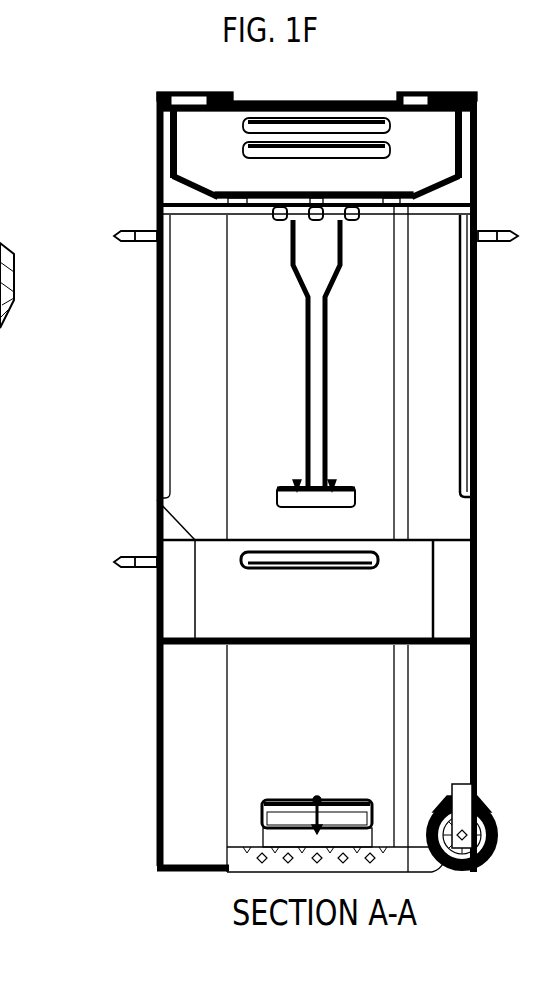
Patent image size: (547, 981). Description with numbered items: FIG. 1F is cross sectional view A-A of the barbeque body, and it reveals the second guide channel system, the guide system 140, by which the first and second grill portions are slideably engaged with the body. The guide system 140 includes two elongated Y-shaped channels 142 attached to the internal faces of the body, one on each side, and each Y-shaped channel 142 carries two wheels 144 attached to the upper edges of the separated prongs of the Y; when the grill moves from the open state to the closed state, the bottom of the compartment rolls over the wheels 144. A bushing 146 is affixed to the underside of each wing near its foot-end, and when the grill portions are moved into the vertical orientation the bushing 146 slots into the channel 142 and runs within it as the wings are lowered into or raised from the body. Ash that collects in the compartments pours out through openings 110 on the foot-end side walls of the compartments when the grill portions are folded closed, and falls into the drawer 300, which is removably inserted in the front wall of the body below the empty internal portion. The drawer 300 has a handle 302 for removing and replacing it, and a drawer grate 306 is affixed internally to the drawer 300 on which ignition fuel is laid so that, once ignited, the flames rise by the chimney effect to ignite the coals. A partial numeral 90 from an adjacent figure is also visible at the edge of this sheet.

The openings 110 is at (250, 148).
The wheels 144 is at (165, 214).
The bushing 146 is at (312, 218).
The guide system 140 is at (274, 278).
The Y-shaped channel 142 is at (307, 371).
The handle 302 is at (117, 569).
The drawer 300 is at (183, 594).
The drawer grate 306 is at (272, 559).
The partial numeral of adjacent figure 90 is at (11, 913).